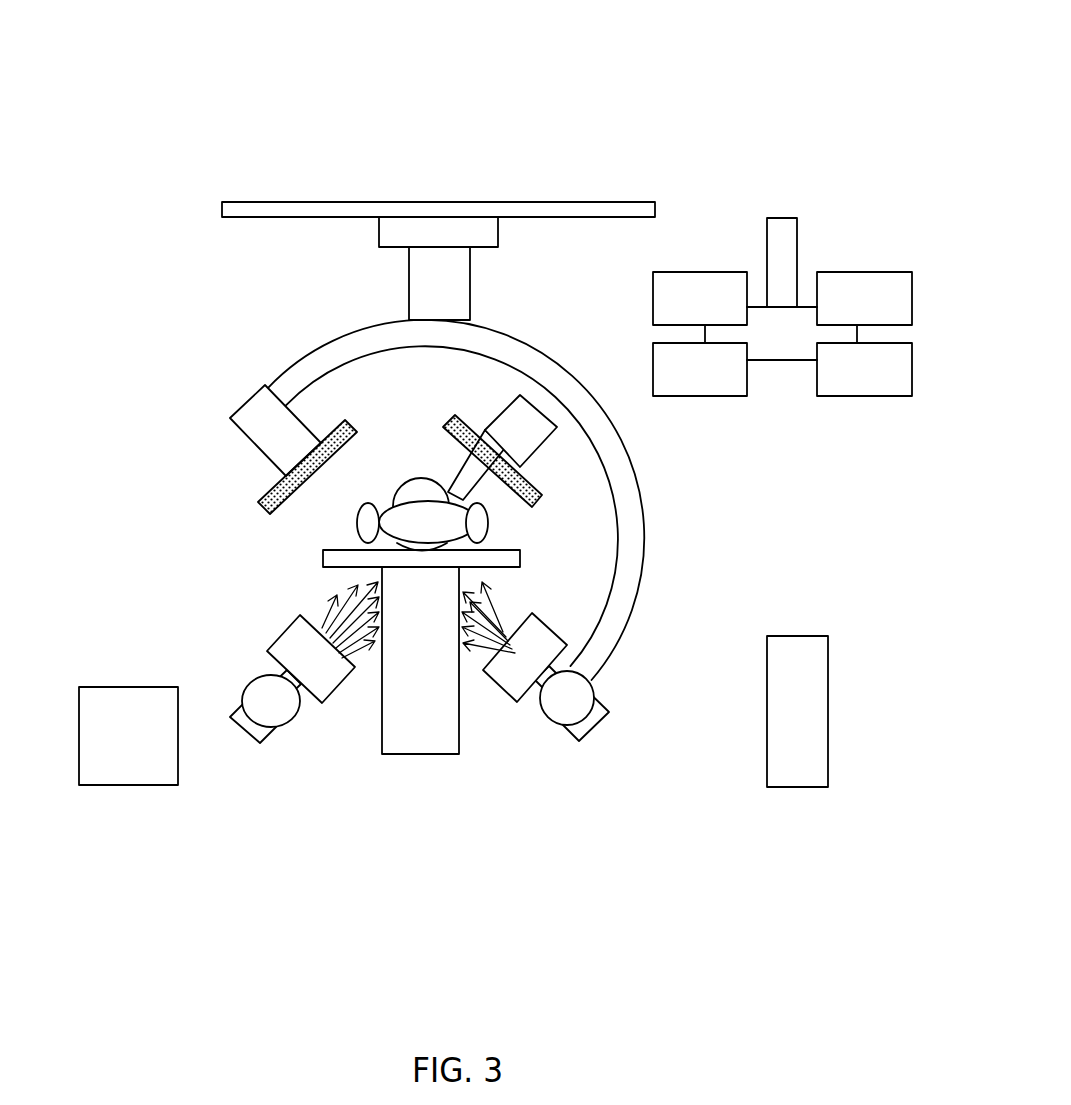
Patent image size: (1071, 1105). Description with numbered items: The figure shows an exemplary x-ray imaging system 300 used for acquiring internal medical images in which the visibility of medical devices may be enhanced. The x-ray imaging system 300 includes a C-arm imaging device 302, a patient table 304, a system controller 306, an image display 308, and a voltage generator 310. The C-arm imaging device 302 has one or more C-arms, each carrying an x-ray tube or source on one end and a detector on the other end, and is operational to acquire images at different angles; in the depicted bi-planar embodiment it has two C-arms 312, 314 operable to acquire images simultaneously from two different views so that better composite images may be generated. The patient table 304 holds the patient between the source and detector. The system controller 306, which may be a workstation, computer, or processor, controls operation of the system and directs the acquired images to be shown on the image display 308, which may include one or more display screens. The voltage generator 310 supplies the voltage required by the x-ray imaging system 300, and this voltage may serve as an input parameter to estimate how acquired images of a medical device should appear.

The x-ray imaging system 300 is at (618, 86).
The C-arm imaging device 302 is at (322, 358).
The patient table 304 is at (317, 557).
The system controller 306 is at (95, 723).
The image display 308 is at (767, 368).
The voltage generator 310 is at (779, 716).
The C-arm 312 is at (560, 740).
The C-arm 314 is at (288, 737).